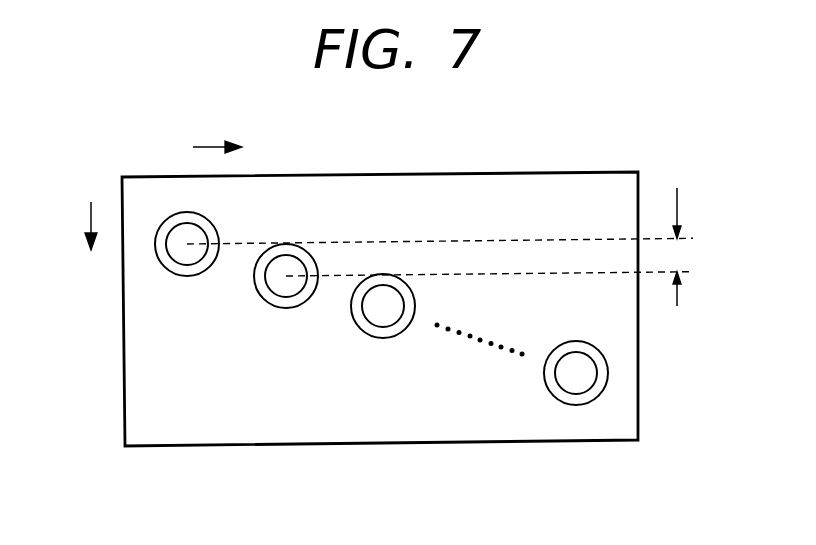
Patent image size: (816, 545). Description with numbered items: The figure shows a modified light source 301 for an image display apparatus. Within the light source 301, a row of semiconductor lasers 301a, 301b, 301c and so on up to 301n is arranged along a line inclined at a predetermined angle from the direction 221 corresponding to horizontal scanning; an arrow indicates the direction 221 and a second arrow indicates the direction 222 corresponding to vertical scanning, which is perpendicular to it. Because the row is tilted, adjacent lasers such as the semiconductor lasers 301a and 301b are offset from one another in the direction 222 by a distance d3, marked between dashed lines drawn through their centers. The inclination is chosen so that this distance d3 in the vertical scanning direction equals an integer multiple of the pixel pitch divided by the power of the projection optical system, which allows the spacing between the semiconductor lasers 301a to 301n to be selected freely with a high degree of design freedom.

The light source 301 is at (573, 171).
The semiconductor laser 301a is at (184, 276).
The semiconductor laser 301b is at (282, 308).
The semiconductor laser 301c is at (380, 339).
The semiconductor laser 301n is at (575, 405).
The direction corresponding to horizontal scanning 221 is at (212, 145).
The direction corresponding to vertical scanning 222 is at (88, 217).
The distance d3 is at (680, 254).